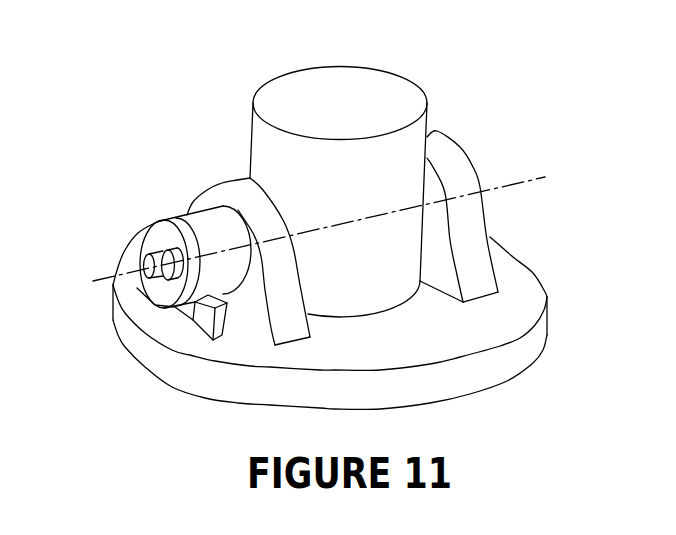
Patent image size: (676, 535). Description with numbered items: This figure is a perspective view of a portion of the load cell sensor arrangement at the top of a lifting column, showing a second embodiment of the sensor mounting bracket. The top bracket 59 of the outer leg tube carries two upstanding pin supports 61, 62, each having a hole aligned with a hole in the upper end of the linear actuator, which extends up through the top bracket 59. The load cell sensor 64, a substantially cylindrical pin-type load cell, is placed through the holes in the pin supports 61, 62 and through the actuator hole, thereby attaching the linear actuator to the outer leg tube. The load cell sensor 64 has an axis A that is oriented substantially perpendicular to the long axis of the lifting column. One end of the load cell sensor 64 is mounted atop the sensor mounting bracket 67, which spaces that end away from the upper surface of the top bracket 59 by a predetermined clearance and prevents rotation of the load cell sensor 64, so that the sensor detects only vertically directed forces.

The top bracket 59 is at (513, 305).
The pin support 61 is at (448, 158).
The pin support 62 is at (257, 312).
The load cell sensor 64 is at (200, 226).
The sensor mounting bracket 67 is at (203, 322).
The axis A is at (500, 177).